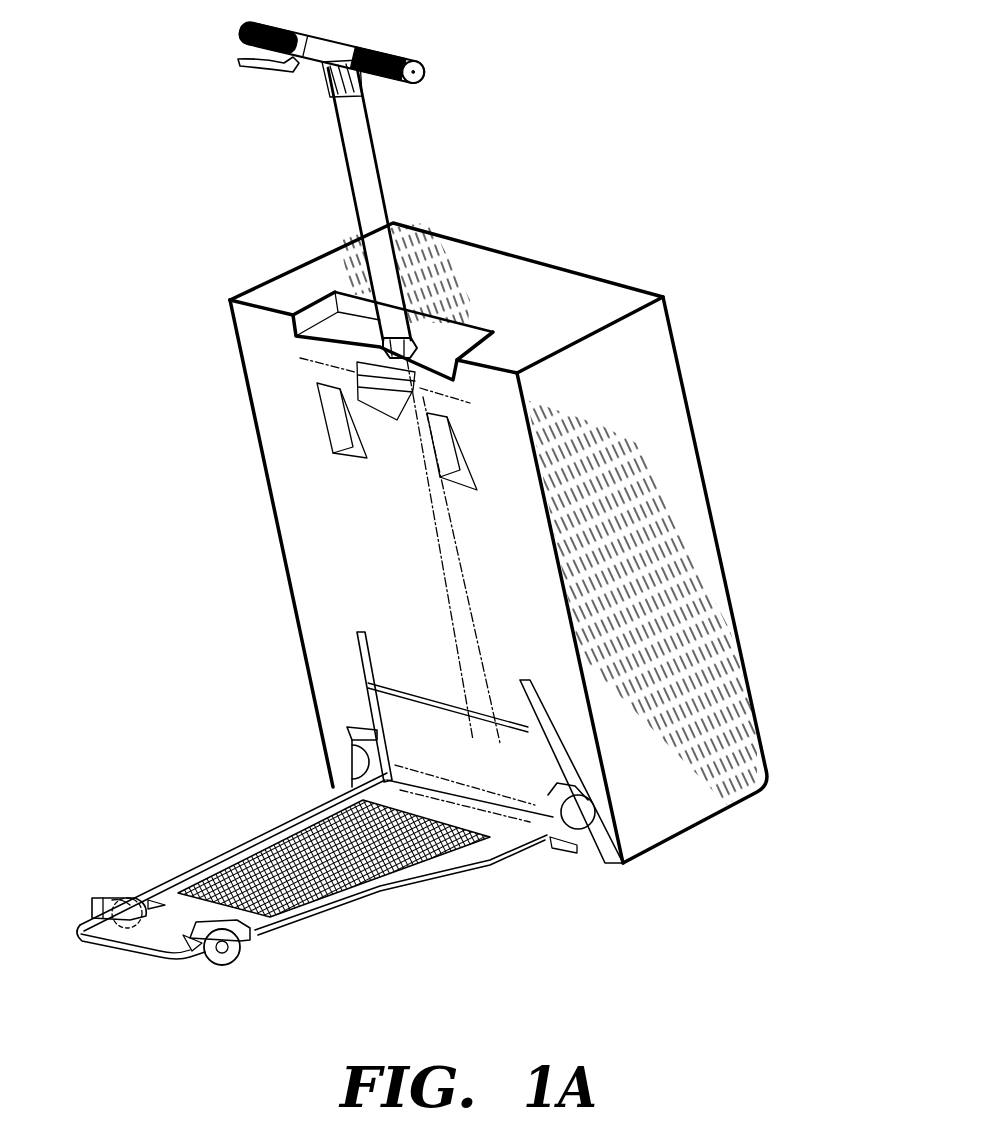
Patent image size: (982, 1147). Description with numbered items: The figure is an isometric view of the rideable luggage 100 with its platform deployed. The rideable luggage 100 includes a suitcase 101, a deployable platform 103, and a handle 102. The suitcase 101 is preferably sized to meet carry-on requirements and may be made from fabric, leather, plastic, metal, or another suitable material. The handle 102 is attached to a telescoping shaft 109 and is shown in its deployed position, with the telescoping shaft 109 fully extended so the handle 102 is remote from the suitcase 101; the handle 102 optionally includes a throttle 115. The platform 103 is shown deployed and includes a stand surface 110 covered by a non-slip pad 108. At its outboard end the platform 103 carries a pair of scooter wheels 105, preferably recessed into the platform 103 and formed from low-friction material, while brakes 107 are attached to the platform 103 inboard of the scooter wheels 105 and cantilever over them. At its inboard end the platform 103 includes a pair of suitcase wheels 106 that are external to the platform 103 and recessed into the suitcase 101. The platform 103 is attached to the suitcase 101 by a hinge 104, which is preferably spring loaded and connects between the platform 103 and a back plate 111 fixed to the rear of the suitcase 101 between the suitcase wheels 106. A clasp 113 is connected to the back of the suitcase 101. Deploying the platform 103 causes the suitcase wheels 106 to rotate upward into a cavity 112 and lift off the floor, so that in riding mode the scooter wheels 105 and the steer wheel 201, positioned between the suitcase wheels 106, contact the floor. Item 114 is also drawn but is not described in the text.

The rideable luggage 100 is at (743, 447).
The suitcase 101 is at (645, 385).
The handle 102 is at (378, 50).
The deployable platform 103 is at (315, 918).
The hinge 104 is at (362, 742).
The scooter wheels 105 is at (242, 950).
The suitcase wheels 106 is at (590, 803).
The brakes 107 is at (97, 895).
The non-slip pad 108 is at (287, 833).
The telescoping shaft 109 is at (360, 143).
The stand surface 110 is at (437, 562).
The back plate 111 is at (417, 757).
The cavity 112 is at (380, 745).
The clasp 113 is at (380, 397).
The stem handle / grip 114 is at (420, 340).
The throttle 115 is at (267, 70).
The steer wheel 201 is at (543, 735).